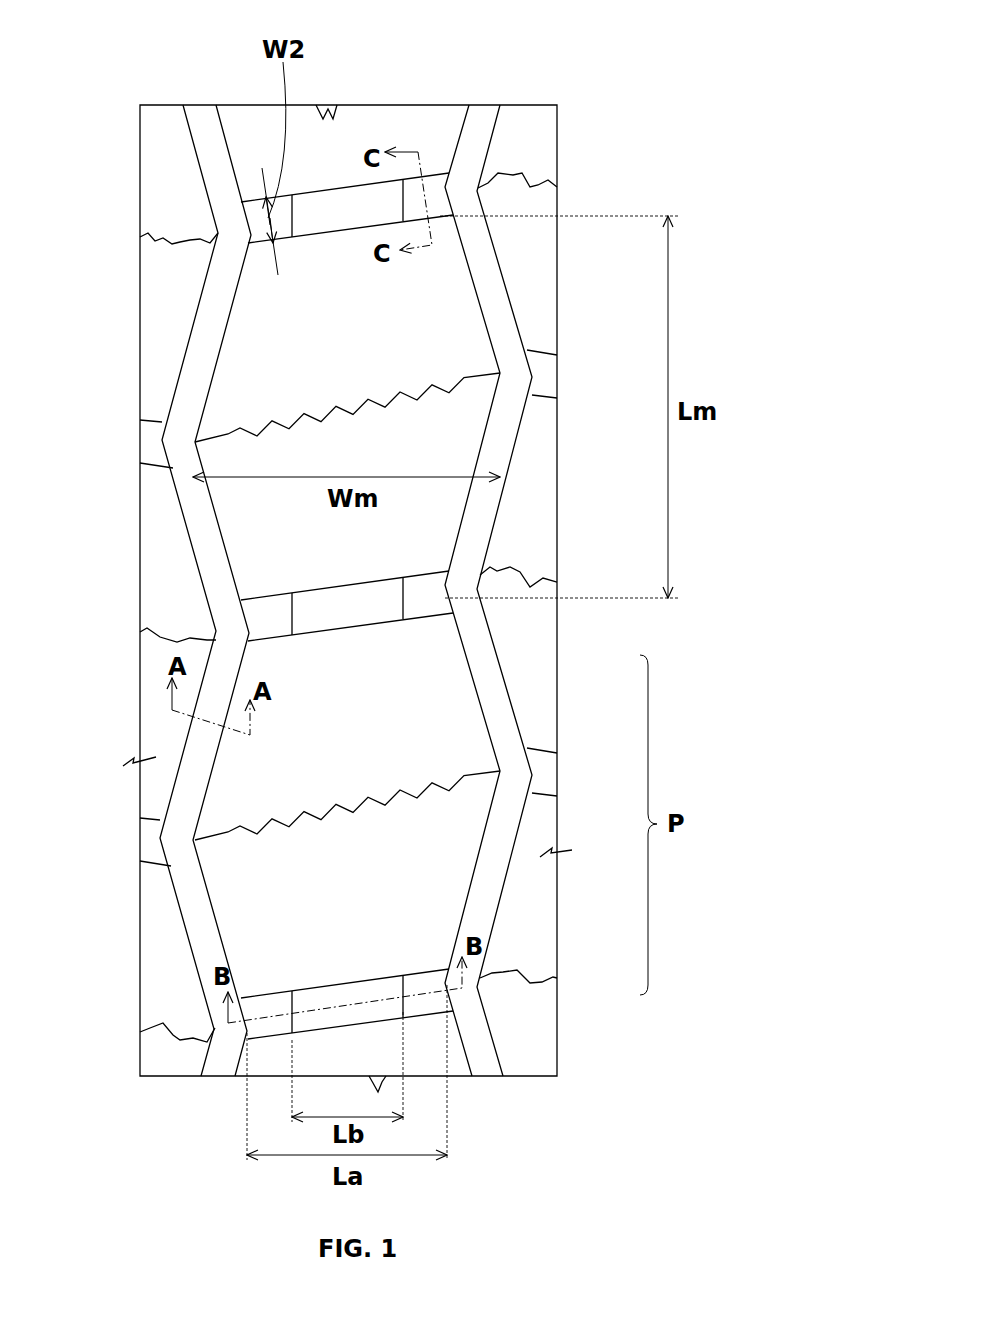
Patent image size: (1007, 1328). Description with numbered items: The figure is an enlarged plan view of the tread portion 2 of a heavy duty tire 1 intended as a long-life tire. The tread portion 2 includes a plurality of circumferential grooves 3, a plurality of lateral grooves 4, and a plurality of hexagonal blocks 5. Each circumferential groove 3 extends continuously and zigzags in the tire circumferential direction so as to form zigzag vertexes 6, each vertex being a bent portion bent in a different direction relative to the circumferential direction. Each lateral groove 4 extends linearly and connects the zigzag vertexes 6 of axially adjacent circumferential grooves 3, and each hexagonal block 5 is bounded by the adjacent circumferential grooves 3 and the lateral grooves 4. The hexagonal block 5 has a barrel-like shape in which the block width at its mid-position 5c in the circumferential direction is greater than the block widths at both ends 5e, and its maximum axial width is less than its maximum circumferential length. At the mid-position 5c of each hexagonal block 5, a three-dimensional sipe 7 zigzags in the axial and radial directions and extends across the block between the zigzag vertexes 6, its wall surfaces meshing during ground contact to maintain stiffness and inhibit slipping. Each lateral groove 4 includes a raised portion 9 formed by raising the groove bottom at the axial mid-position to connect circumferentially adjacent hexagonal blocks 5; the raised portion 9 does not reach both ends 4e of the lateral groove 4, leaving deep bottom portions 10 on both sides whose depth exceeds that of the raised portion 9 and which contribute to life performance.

The heavy duty tire 1 is at (667, 82).
The tread portion 2 is at (598, 88).
The circumferential groove 3 is at (203, 138).
The lateral groove 4 is at (440, 592).
The end of lateral groove 4e is at (457, 191).
The hexagonal block 5 is at (440, 325).
The mid-position of block 5c is at (127, 838).
The end of block 5e is at (163, 652).
The zigzag vertex 6 is at (518, 368).
The three-dimensional sipe 7 is at (290, 413).
The raised portion 9 is at (333, 593).
The deep bottom portion 10 is at (428, 582).